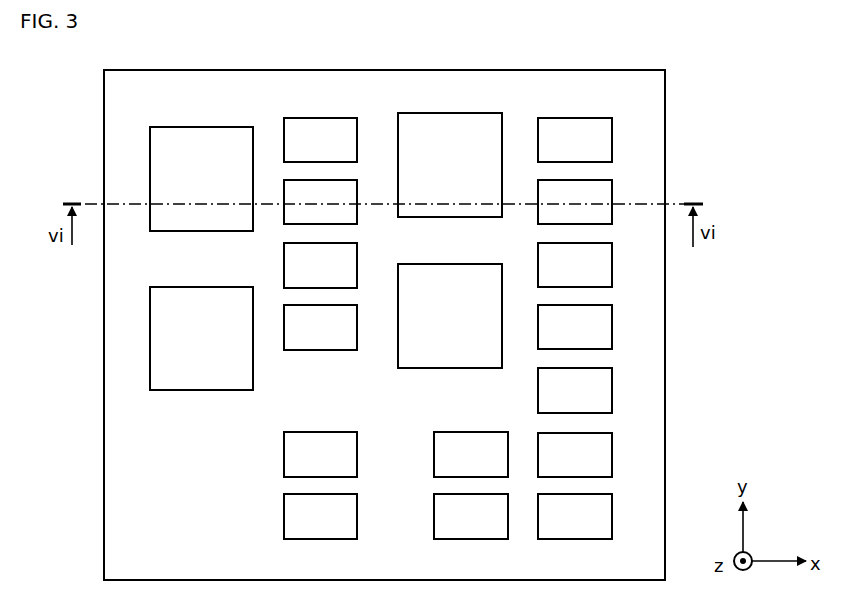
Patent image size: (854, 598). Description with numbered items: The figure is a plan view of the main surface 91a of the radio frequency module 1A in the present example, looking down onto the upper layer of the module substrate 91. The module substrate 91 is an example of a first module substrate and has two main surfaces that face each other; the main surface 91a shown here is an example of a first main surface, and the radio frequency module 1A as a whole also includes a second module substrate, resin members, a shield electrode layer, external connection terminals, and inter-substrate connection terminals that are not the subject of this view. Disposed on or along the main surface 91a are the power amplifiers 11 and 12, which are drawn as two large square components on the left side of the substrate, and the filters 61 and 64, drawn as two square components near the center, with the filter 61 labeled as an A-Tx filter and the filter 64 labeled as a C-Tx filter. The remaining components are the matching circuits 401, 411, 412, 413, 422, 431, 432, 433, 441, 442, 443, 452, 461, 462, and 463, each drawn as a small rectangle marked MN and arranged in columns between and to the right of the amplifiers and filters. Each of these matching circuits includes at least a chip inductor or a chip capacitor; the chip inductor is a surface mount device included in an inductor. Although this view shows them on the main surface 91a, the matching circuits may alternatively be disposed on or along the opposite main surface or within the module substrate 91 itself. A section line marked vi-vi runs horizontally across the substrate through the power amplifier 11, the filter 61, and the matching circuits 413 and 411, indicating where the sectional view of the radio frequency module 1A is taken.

The radio frequency module 1A is at (715, 40).
The module substrate 91 is at (470, 70).
The main surface 91a is at (617, 76).
The power amplifier 11 is at (182, 127).
The power amplifier 12 is at (182, 287).
The filter 61 is at (433, 113).
The filter 64 is at (433, 264).
The matching circuit 401 is at (612, 133).
The matching circuit 411 is at (612, 195).
The matching circuit 412 is at (378, 121).
The matching circuit 413 is at (378, 183).
The matching circuit 422 is at (378, 435).
The matching circuit 431 is at (612, 320).
The matching circuit 432 is at (612, 448).
The matching circuit 433 is at (612, 509).
The matching circuit 441 is at (612, 258).
The matching circuit 442 is at (378, 246).
The matching circuit 443 is at (378, 308).
The matching circuit 452 is at (378, 497).
The matching circuit 461 is at (612, 383).
The matching circuit 462 is at (455, 432).
The matching circuit 463 is at (452, 539).